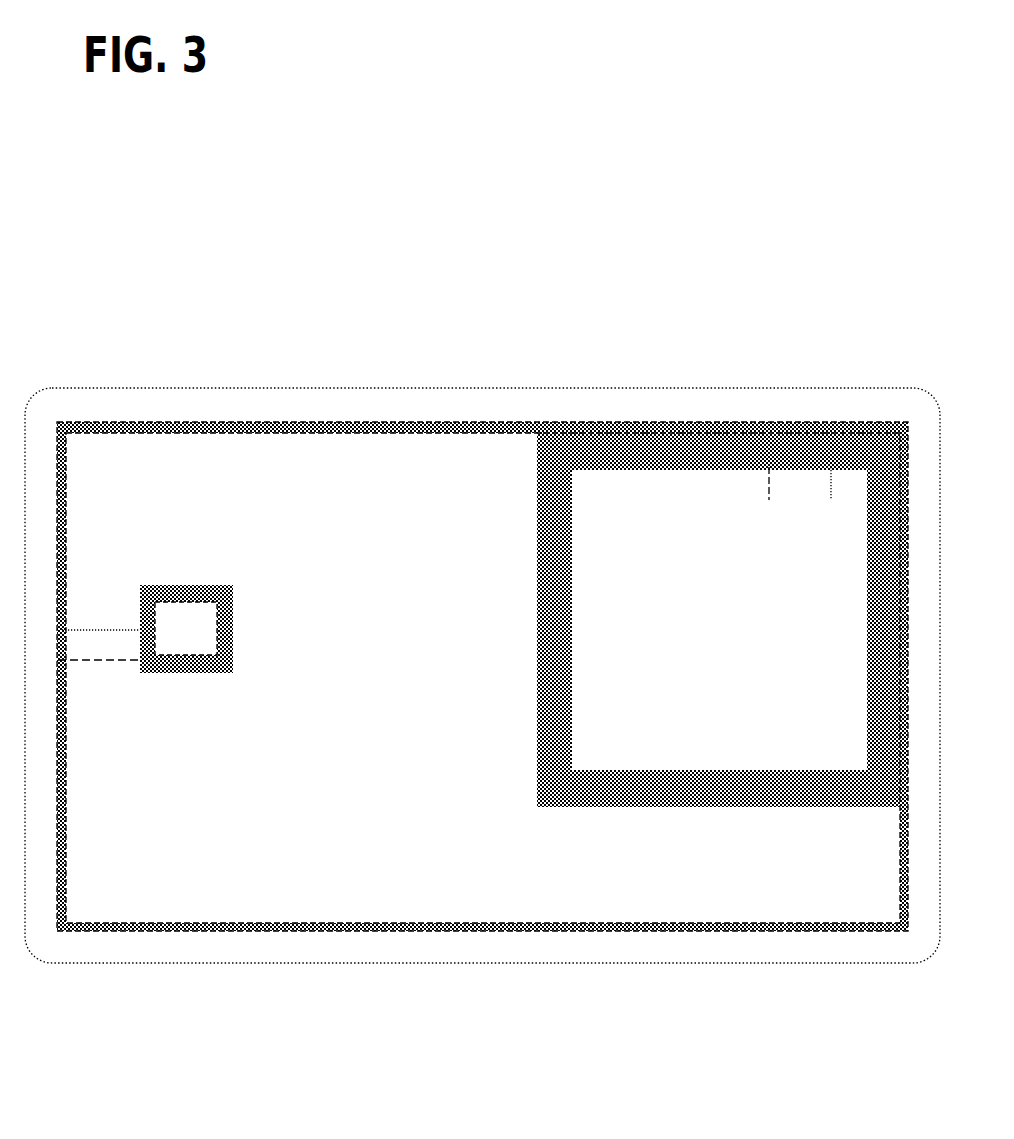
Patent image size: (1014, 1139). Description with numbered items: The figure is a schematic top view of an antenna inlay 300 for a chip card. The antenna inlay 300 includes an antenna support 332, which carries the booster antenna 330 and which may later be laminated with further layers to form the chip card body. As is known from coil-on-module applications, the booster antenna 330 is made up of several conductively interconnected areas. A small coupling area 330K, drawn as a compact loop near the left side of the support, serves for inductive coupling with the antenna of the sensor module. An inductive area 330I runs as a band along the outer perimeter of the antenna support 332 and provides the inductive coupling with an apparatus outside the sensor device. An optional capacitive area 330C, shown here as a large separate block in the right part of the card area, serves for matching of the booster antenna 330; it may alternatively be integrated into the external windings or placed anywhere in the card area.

The antenna inlay 300 is at (757, 228).
The booster antenna 330 is at (588, 303).
The coupling area 330K is at (188, 585).
The inductive area 330I is at (297, 423).
The capacitive area 330C is at (630, 452).
The antenna support 332 is at (655, 963).